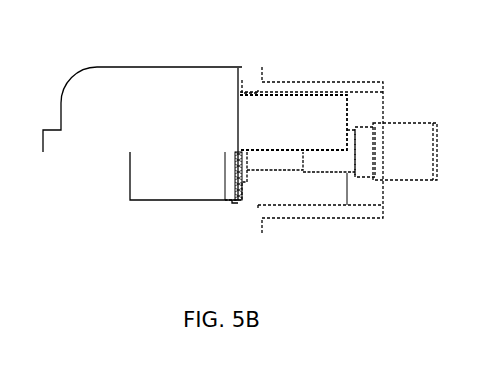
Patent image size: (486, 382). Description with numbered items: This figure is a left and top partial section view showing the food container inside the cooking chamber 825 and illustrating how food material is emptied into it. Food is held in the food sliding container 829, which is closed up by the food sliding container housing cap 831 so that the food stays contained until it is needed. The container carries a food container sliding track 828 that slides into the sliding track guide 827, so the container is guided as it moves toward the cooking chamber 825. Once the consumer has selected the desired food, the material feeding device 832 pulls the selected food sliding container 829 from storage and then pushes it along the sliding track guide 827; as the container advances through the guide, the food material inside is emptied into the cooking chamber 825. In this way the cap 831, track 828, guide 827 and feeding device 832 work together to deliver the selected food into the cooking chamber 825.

The cooking chamber 825 is at (102, 140).
The sliding track guide 827 is at (345, 210).
The food container sliding track 828 is at (257, 192).
The food sliding container 829 is at (208, 186).
The food sliding container housing cap 831 is at (268, 118).
The material feeding device 832 is at (385, 132).